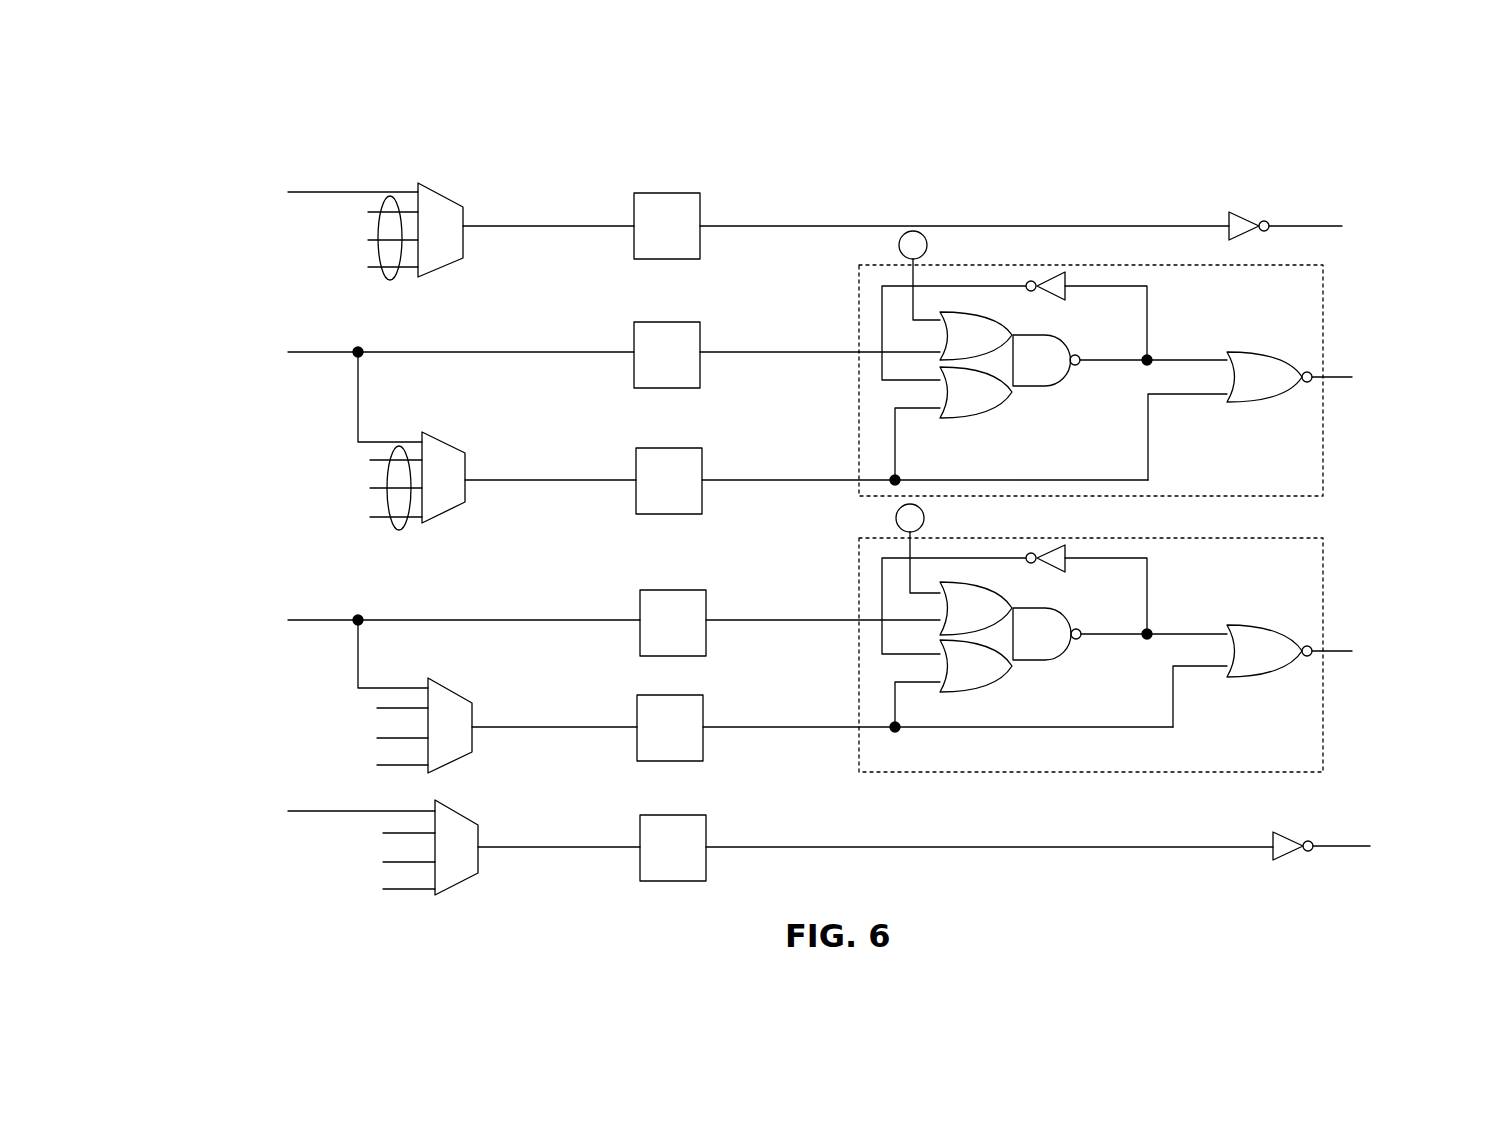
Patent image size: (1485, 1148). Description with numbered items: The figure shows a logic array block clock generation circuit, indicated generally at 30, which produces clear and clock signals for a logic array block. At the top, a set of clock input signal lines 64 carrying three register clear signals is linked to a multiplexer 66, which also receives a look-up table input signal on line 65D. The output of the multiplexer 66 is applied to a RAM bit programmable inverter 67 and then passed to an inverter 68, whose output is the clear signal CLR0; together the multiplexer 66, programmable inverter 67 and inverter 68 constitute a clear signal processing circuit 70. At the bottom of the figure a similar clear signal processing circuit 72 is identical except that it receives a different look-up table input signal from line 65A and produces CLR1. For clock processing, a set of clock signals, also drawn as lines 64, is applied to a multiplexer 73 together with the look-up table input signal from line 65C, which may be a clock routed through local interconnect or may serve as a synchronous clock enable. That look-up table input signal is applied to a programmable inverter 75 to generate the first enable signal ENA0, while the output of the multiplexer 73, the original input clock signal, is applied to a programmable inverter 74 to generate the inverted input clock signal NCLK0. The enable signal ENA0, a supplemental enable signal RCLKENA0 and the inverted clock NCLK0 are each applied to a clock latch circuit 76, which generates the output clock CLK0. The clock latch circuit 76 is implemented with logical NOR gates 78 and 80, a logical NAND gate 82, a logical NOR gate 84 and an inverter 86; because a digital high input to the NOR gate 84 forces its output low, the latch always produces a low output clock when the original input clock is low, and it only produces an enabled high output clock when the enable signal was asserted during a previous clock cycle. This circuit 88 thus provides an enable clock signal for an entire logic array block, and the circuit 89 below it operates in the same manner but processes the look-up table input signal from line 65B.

The clock and clear signal routing circuit 30 is at (945, 175).
The clock input signal lines 64 is at (395, 278).
The line 65A is at (328, 808).
The line 65B is at (305, 620).
The line 65C is at (303, 352).
The line 65D is at (308, 192).
The multiplexer 66 is at (437, 205).
The RAM bit programmable inverter 67 is at (678, 193).
The inverter 68 is at (1240, 222).
The clear signal processing circuit 70 is at (1333, 192).
The clear signal processing circuit 72 is at (1358, 826).
The multiplexer 73 is at (433, 455).
The programmable inverter 74 is at (690, 448).
The programmable inverter 75 is at (683, 322).
The clock latch circuit 76 is at (1320, 305).
The logical NOR gate 78 is at (978, 332).
The logical NOR gate 80 is at (978, 400).
The logical NAND gate 82 is at (1040, 378).
The logical NOR gate 84 is at (1250, 358).
The inverter 86 is at (1060, 291).
The circuit 88 is at (1352, 353).
The circuit 89 is at (1352, 627).